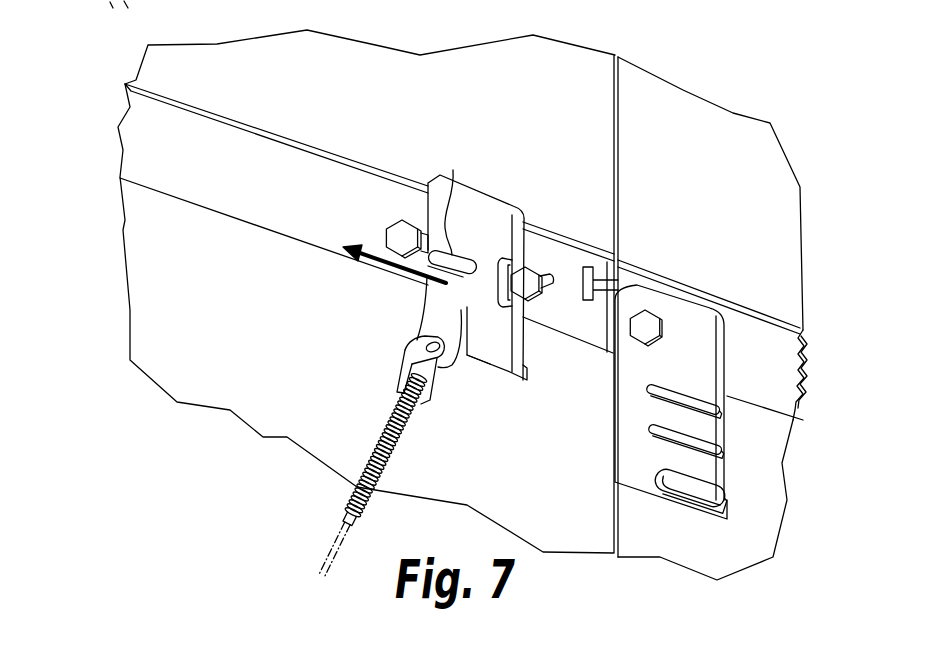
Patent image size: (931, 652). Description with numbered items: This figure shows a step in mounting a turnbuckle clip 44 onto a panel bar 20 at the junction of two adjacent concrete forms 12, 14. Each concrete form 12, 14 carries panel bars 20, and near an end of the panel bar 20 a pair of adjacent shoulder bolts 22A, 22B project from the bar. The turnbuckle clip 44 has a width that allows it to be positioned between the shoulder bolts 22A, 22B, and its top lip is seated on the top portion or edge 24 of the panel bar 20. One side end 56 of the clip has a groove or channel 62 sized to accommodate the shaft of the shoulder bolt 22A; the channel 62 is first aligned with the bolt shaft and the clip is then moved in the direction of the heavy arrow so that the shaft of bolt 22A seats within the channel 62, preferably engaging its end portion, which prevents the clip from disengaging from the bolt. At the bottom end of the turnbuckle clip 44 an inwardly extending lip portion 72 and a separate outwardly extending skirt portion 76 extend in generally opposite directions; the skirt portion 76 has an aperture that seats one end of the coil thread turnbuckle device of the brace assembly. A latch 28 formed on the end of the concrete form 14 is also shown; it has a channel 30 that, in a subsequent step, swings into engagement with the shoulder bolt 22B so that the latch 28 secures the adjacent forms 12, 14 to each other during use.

The concrete form 12 is at (575, 87).
The concrete form 14 is at (744, 138).
The panel bar 20 is at (244, 176).
The top portion or edge of the panel bar 24 is at (384, 172).
The latch mechanism 28 is at (692, 318).
The channel 30 is at (697, 485).
The turnbuckle clip 44 is at (484, 184).
The side end 56 is at (421, 294).
The groove or channel 62 is at (453, 172).
The inwardly extending lip portion 72 is at (543, 375).
The outwardly extending skirt portion 76 is at (412, 327).
The shoulder bolt 22A is at (398, 224).
The shoulder bolt 22B is at (527, 266).